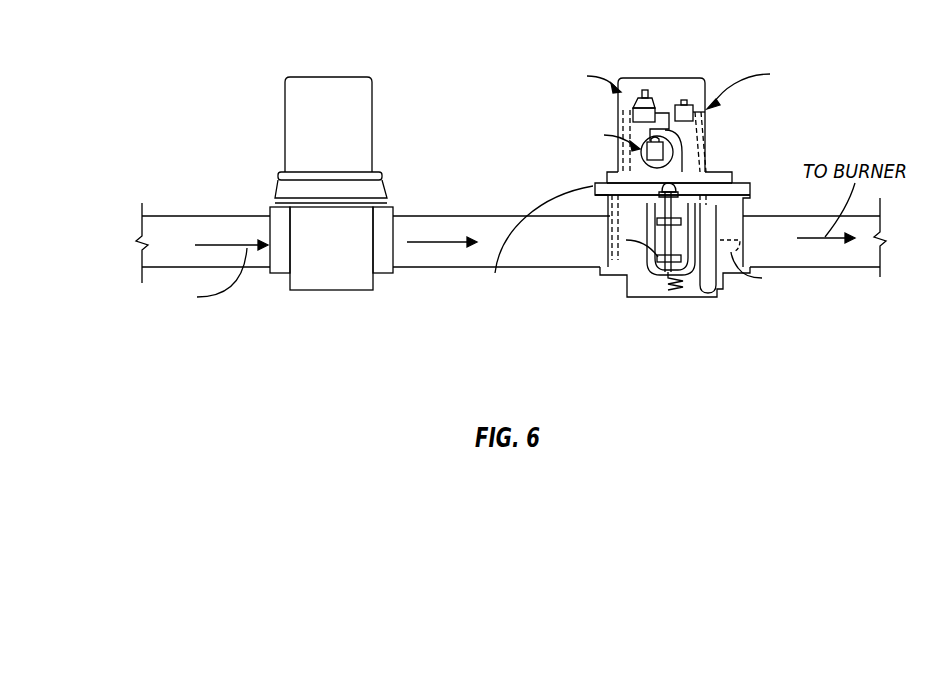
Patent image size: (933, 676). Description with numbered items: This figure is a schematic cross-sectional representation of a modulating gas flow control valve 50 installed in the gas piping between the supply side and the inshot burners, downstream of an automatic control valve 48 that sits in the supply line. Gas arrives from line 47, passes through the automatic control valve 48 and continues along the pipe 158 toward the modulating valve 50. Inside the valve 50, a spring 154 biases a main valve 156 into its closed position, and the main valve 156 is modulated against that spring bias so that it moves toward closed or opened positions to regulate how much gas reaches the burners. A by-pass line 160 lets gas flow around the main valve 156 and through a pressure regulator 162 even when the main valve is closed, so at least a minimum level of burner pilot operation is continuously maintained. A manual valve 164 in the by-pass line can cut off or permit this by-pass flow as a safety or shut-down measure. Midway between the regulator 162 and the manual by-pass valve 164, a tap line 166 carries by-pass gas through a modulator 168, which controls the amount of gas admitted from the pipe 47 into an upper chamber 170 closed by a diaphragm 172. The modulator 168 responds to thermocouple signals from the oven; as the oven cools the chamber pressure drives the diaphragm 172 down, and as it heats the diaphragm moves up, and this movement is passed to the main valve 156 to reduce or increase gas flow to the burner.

The gas supply line 47 is at (207, 216).
The automatic control valve 48 is at (345, 262).
The modulating gas flow control valve 50 is at (608, 116).
The spring 154 is at (668, 292).
The main valve 156 is at (703, 293).
The pipe to upper diaphragm chamber 158 is at (456, 268).
The by-pass line 160 is at (618, 153).
The pressure regulator 162 is at (640, 93).
The manual valve 164 is at (688, 103).
The tap line 166 is at (708, 111).
The modulator 168 is at (703, 137).
The upper chamber 170 is at (707, 220).
The diaphragm 172 is at (718, 178).